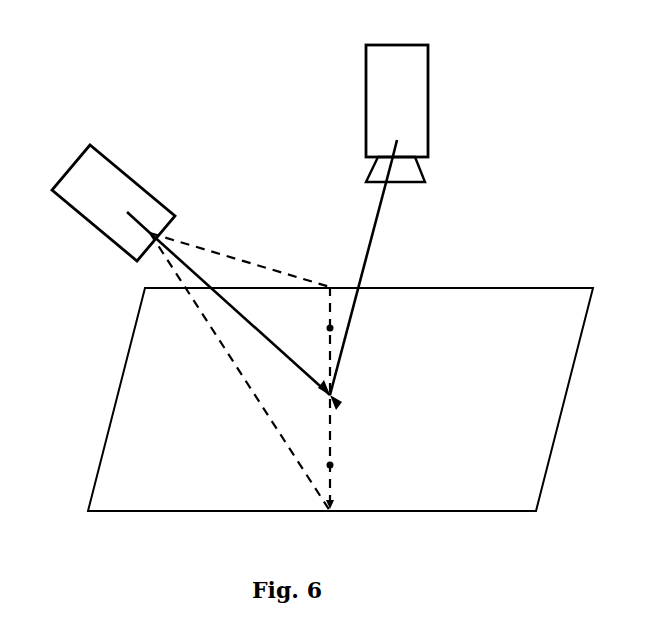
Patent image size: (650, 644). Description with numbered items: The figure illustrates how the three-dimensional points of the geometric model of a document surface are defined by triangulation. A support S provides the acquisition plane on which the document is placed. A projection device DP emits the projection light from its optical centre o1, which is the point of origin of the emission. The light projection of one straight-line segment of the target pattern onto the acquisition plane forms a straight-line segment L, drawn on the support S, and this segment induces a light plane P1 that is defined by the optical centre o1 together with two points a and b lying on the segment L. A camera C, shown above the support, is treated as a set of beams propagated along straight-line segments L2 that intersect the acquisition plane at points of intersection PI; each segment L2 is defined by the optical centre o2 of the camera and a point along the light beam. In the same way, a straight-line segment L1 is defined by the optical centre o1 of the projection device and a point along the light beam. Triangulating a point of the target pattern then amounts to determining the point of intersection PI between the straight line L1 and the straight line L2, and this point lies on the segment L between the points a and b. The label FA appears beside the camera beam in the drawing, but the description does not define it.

The support S is at (340, 399).
The projection device DP is at (82, 218).
The optical centre of the projection device o1 is at (127, 209).
The camera C is at (428, 93).
The optical centre of the camera o2 is at (395, 134).
The straight-line segment L1 is at (233, 320).
The straight-line segment L2 is at (355, 272).
The field of view axis FA is at (375, 223).
The light plane P1 is at (277, 418).
The straight-line segment L is at (331, 420).
The point of intersection PI is at (345, 405).
The point a is at (327, 328).
The point b is at (332, 467).